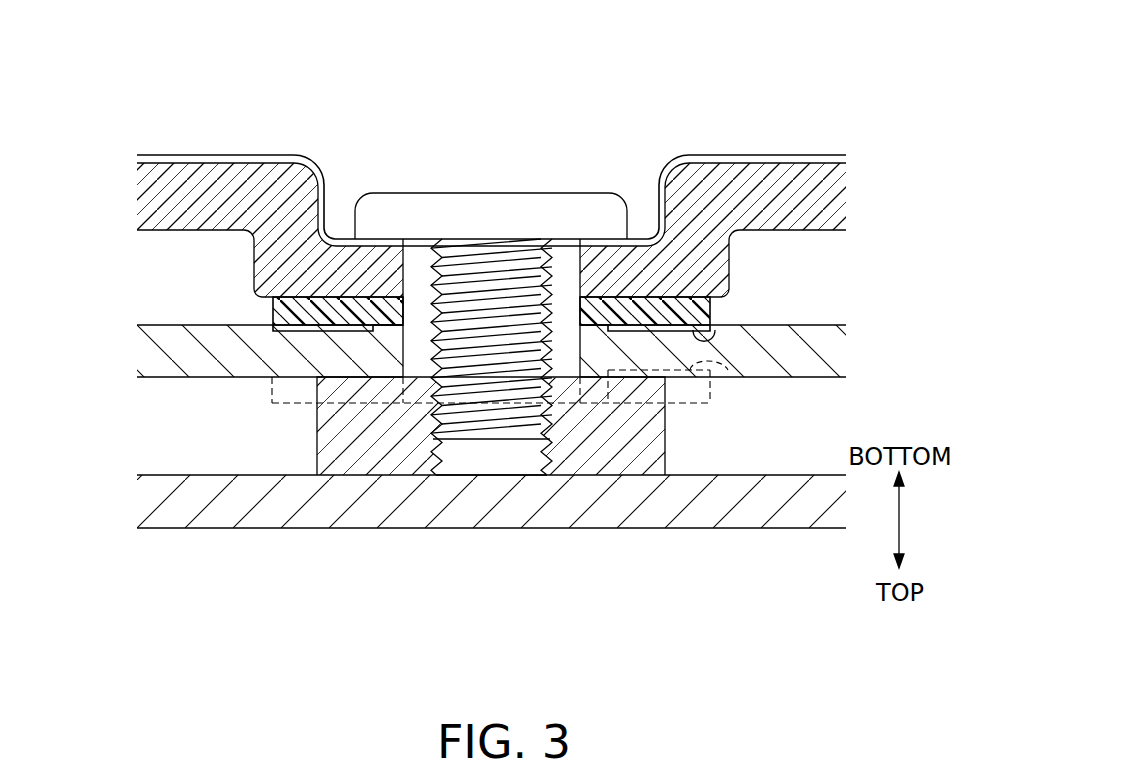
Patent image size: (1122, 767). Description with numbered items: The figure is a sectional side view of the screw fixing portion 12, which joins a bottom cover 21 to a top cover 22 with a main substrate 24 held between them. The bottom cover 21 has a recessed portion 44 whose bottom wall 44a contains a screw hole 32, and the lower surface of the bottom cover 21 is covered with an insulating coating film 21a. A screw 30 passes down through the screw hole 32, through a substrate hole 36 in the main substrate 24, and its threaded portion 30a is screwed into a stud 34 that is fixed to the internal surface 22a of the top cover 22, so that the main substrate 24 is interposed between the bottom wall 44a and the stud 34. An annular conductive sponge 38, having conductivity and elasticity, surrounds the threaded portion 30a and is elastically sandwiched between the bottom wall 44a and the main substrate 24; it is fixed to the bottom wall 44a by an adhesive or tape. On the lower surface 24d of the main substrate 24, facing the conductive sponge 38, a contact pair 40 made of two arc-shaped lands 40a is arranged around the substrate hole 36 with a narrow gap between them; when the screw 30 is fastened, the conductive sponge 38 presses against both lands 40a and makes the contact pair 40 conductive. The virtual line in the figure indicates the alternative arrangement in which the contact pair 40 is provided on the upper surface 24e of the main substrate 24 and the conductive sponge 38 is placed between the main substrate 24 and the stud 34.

The screw fixing portion 12 is at (713, 70).
The bottom cover 21 is at (172, 185).
The insulating coating film 21a is at (222, 160).
The top cover 22 is at (172, 518).
The internal surface 22a is at (270, 475).
The main substrate 24 is at (198, 367).
The lower surface 24d is at (846, 325).
The upper surface 24e is at (846, 377).
The screw 30 is at (504, 212).
The threaded portion 30a is at (455, 270).
The screw hole 32 is at (408, 275).
The stud 34 is at (650, 427).
The substrate hole 36 is at (318, 411).
The conductive sponge 38 is at (707, 312).
The contact pair 40 is at (295, 322).
The land 40a is at (703, 343).
The recessed portion 44 is at (660, 207).
The bottom wall 44a is at (638, 272).